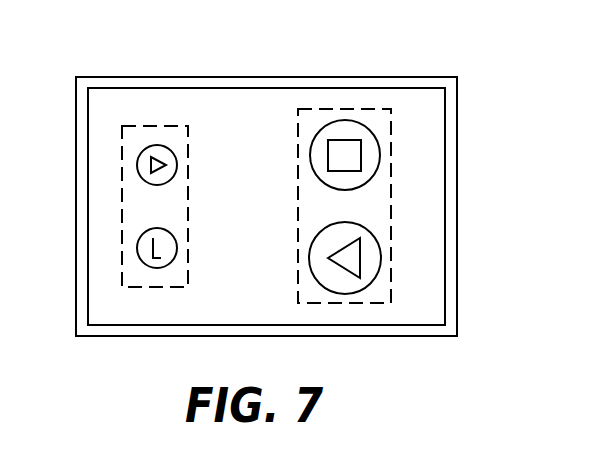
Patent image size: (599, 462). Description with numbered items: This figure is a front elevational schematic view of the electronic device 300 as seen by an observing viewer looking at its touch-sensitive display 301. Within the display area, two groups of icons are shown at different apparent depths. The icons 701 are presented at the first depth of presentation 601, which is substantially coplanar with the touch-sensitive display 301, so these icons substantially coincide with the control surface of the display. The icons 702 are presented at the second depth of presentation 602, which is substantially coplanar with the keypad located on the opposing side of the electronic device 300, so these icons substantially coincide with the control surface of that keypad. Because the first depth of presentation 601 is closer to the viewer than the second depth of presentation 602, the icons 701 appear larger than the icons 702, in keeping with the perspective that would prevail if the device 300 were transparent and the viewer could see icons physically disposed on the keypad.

The electronic device 300 is at (98, 77).
The touch-sensitive display 301 is at (240, 110).
The first depth of presentation 601 is at (332, 109).
The second depth of presentation 602 is at (163, 125).
The icons 701 is at (372, 160).
The icons 702 is at (174, 162).